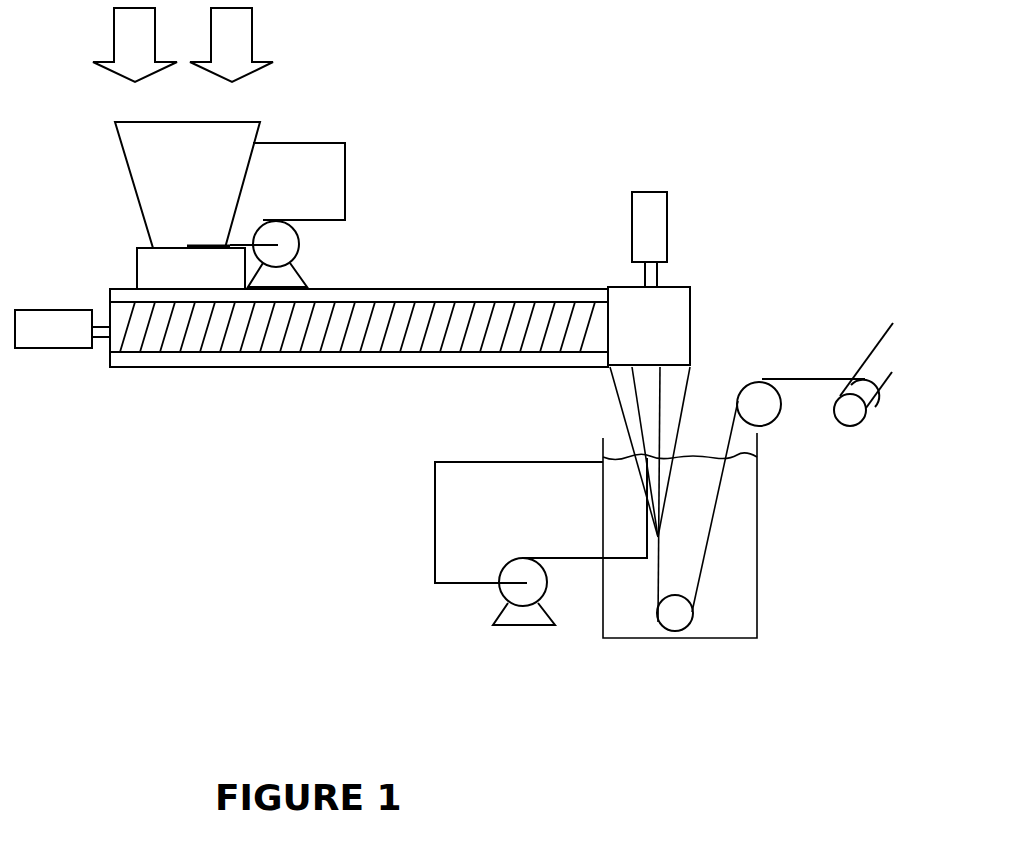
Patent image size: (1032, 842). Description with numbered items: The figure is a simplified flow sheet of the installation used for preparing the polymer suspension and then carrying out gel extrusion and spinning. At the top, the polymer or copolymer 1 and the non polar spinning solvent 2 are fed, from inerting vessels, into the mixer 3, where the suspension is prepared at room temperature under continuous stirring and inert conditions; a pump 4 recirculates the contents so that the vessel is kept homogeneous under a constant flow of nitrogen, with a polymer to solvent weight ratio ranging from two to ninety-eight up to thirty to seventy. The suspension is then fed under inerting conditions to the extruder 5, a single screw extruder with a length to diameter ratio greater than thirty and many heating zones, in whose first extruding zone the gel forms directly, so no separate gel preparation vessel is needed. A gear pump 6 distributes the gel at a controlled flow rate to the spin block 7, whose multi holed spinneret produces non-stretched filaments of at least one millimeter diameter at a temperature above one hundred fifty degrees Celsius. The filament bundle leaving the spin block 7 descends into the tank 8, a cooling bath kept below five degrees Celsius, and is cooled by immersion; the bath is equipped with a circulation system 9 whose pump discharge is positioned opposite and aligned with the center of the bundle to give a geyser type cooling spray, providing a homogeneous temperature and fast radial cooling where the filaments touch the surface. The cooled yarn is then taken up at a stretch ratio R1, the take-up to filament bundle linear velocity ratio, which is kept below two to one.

The polymer or copolymer 1 is at (135, 45).
The spinning solvent 2 is at (231, 45).
The mixer 3 is at (187, 185).
The pump 4 is at (287, 215).
The extruder 5 is at (311, 307).
The gear pump 6 is at (649, 239).
The spin block 7 is at (649, 454).
The tank 8 is at (680, 519).
The circulation system 9 is at (541, 541).
The stretch ratio R1 is at (815, 374).